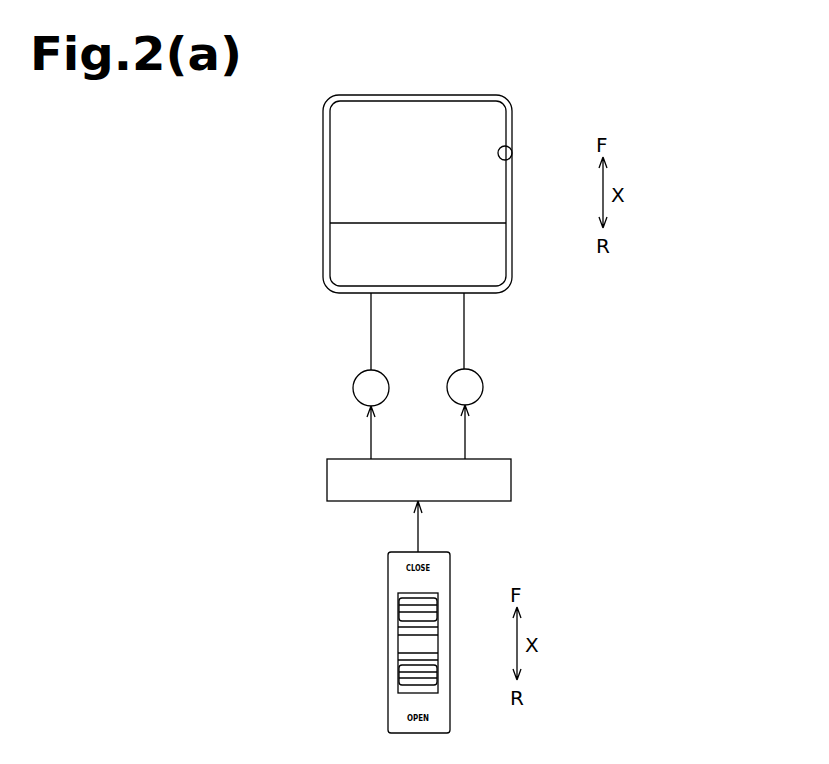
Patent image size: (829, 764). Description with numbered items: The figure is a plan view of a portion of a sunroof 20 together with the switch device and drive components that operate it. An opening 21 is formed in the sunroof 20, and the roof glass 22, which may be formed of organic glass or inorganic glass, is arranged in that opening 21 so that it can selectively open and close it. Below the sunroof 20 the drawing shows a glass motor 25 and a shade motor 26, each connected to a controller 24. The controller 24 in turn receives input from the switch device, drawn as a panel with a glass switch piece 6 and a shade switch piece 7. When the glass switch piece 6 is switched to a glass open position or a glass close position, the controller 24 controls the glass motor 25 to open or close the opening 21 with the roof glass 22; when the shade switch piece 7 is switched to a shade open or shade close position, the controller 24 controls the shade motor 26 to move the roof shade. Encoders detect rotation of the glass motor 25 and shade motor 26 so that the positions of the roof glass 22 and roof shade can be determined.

The sunroof 20 is at (536, 118).
The opening 21 is at (512, 155).
The roof glass 22 is at (340, 246).
The controller 24 is at (418, 461).
The glass motor 25 is at (358, 377).
The shade motor 26 is at (477, 375).
The glass switch piece 6 is at (438, 610).
The shade switch piece 7 is at (438, 672).